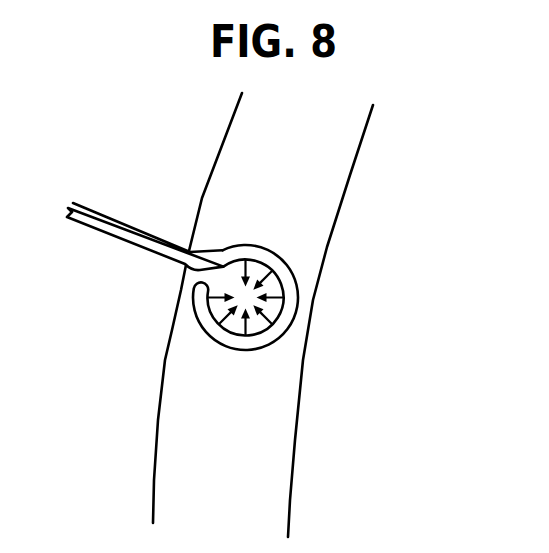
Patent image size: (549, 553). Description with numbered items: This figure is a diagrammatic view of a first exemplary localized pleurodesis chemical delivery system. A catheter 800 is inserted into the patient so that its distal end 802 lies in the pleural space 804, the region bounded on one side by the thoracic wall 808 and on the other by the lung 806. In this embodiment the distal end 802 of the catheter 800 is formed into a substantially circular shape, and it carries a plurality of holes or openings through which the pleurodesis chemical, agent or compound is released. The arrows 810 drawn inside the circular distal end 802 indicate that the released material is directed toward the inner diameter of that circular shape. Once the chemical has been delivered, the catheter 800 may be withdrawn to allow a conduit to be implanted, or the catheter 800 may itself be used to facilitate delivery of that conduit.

The catheter 800 is at (97, 231).
The distal end 802 is at (208, 335).
The pleural space 804 is at (245, 478).
The lung 806 is at (359, 150).
The thoracic wall 808 is at (231, 121).
The arrows 810 is at (231, 283).